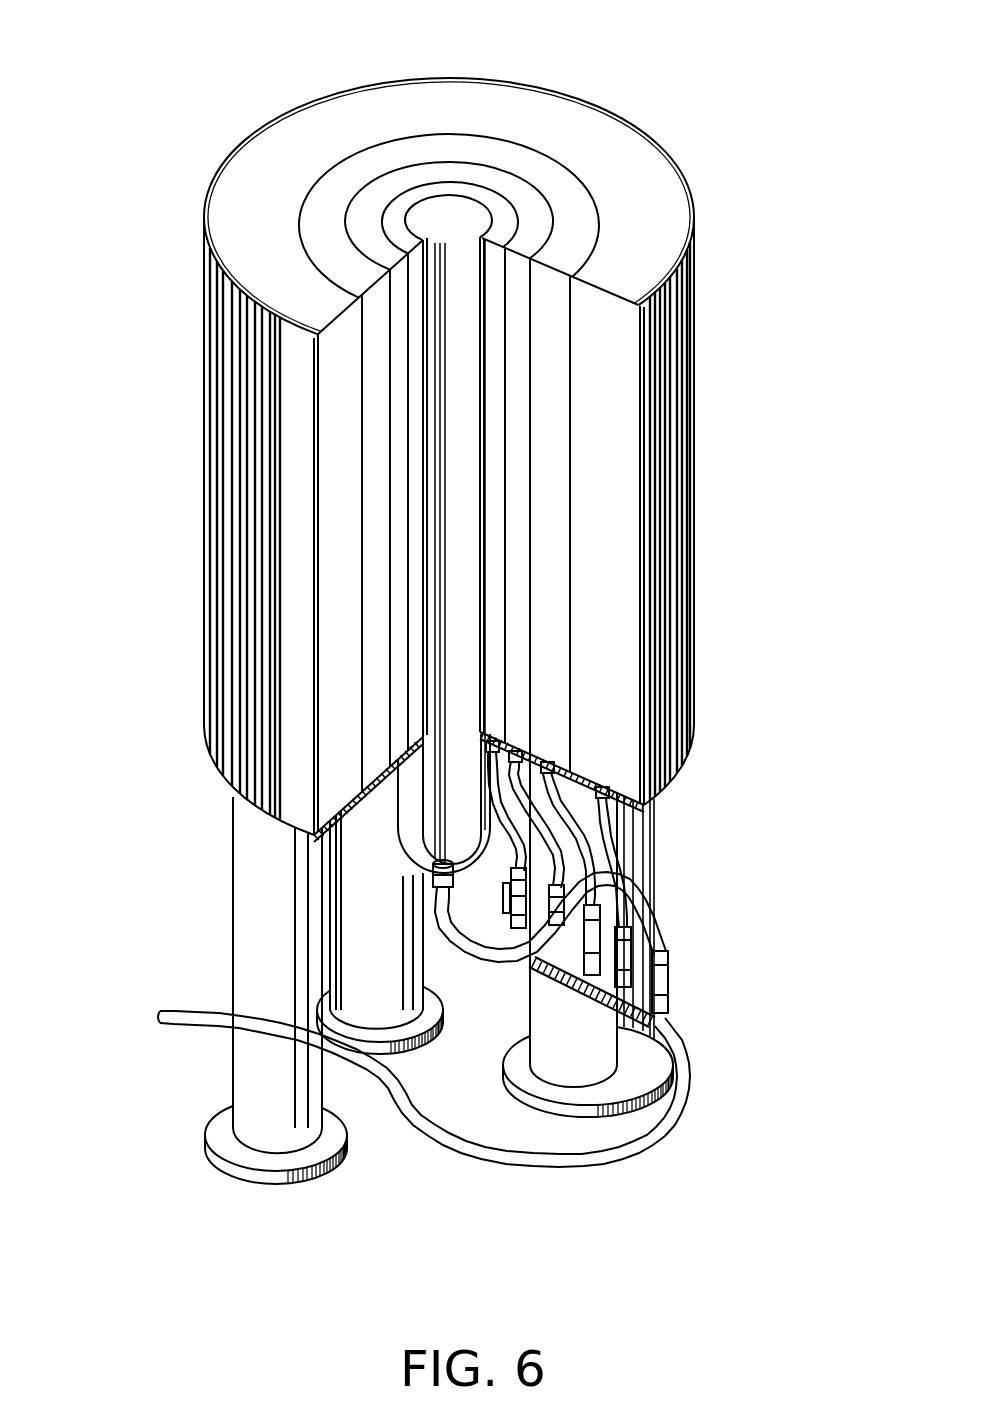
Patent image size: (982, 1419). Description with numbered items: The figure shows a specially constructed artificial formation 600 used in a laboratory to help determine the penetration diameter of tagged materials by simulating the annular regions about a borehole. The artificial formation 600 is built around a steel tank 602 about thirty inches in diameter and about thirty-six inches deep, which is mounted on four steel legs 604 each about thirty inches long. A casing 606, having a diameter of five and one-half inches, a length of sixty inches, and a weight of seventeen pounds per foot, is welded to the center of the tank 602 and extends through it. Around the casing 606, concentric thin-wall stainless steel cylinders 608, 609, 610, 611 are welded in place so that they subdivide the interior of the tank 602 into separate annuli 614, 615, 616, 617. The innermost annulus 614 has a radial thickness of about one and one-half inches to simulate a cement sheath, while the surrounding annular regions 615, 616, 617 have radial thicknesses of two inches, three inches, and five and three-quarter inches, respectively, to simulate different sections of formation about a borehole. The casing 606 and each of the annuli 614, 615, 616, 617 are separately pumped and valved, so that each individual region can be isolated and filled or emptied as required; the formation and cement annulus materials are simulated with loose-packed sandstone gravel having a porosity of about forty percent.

The artificial formation 600 is at (140, 517).
The steel tank 602 is at (680, 478).
The steel legs 604 is at (233, 905).
The casing 606 is at (458, 212).
The thin-wall stainless steel cylinder 608 is at (525, 212).
The thin-wall stainless steel cylinder 609 is at (550, 223).
The thin-wall stainless steel cylinder 610 is at (600, 233).
The thin-wall stainless steel cylinder 611 is at (687, 267).
The annulus 614 is at (390, 217).
The annular region 615 is at (360, 220).
The annular region 616 is at (320, 233).
The annular region 617 is at (260, 250).